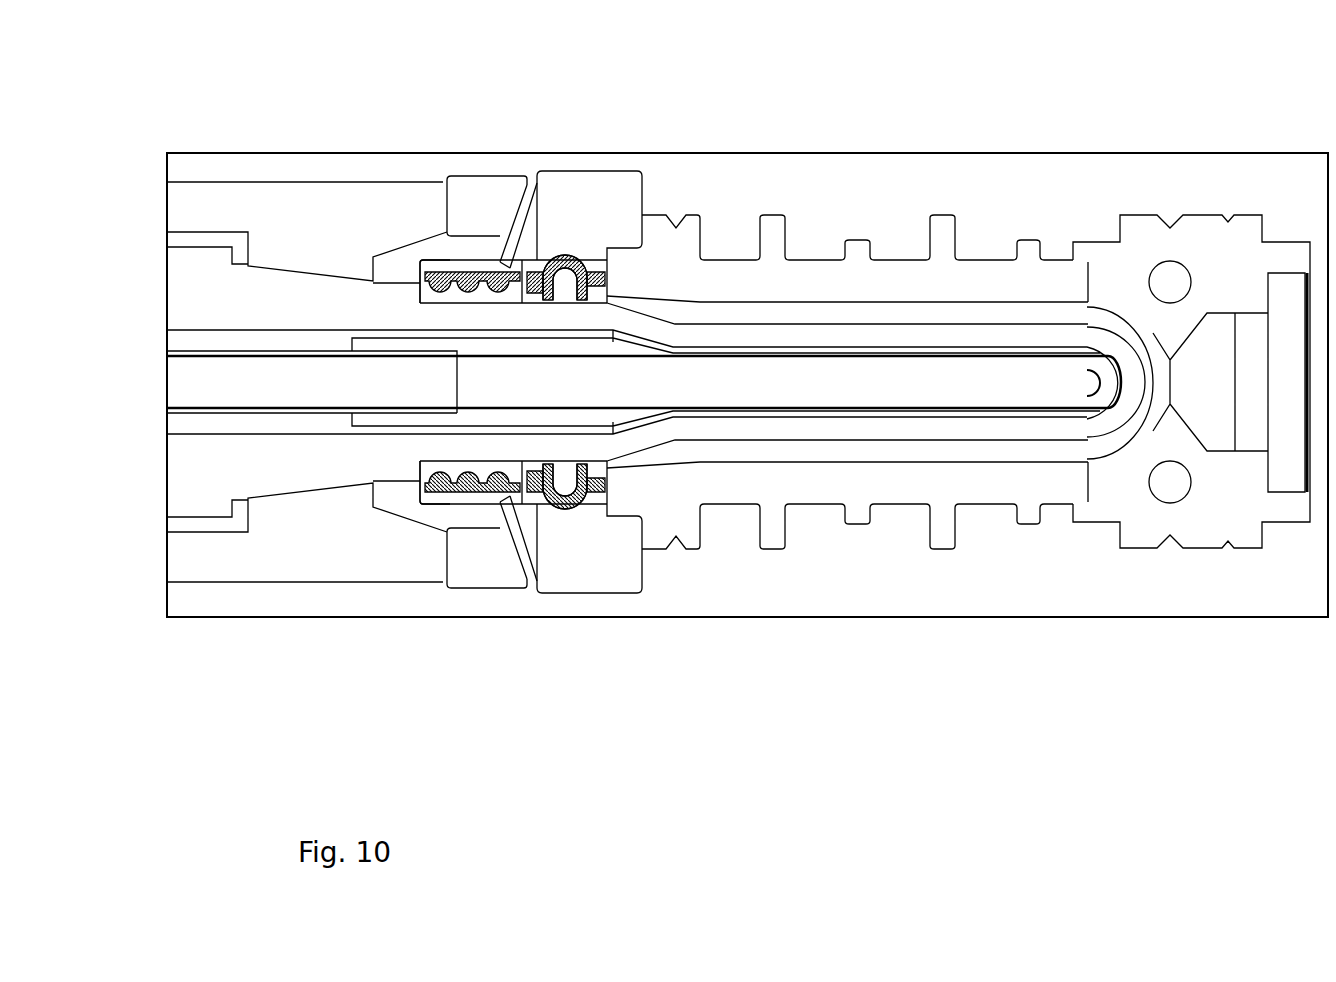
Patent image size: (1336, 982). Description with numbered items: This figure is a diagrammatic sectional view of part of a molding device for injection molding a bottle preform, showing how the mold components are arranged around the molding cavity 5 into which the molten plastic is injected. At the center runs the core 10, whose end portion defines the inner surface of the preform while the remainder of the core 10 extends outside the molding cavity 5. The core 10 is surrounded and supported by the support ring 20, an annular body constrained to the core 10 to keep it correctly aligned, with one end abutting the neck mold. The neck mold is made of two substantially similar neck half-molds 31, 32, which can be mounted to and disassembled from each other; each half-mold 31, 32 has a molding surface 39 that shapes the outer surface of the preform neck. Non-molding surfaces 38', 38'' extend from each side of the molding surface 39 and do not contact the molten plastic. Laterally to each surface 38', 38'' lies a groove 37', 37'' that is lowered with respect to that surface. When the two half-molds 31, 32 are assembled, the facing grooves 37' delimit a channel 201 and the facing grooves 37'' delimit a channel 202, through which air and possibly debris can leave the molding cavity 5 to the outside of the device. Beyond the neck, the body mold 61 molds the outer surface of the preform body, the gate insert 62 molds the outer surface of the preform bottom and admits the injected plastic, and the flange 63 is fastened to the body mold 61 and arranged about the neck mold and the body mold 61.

The core 10 is at (200, 475).
The support ring 20 is at (265, 547).
The neck half-mold 31 is at (452, 225).
The neck half-mold 32 is at (463, 523).
The groove 37' is at (513, 182).
The groove 37'' is at (513, 593).
The non-molding surface 38' is at (376, 209).
The non-molding surface 38'' is at (380, 563).
The molding surface 39 is at (553, 298).
The channel 201 is at (527, 185).
The channel 202 is at (525, 565).
The molding cavity 5 is at (973, 445).
The body mold 61 is at (800, 480).
The gate insert 62 is at (622, 542).
The flange 63 is at (1125, 485).